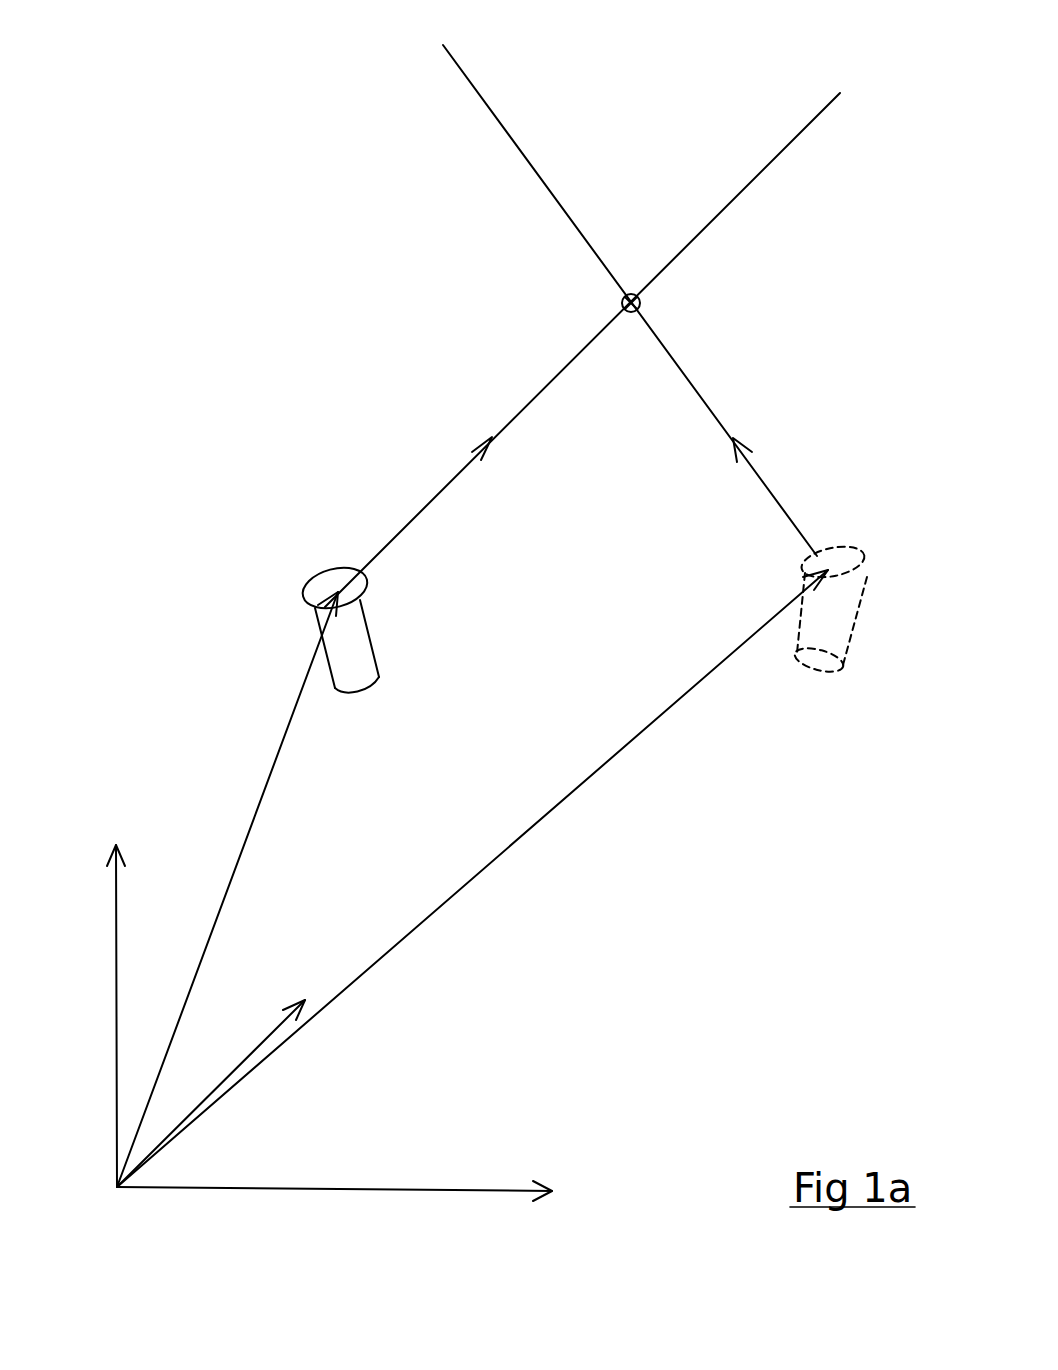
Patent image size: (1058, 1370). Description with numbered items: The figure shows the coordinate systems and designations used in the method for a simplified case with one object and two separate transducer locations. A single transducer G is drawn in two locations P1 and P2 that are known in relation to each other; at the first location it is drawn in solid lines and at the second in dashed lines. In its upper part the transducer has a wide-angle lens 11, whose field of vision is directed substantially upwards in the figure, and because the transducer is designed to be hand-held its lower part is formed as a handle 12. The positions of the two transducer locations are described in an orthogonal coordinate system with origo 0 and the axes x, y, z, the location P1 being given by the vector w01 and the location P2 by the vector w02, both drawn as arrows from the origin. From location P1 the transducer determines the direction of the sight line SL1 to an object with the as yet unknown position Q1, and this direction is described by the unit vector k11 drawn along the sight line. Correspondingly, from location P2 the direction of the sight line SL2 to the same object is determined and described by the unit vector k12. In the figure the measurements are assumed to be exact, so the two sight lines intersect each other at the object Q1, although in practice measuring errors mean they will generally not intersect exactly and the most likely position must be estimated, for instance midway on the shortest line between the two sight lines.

The wide-angle lens 11 is at (315, 580).
The handle 12 is at (325, 650).
The first transducer location P1 is at (397, 668).
The second transducer location P2 is at (853, 665).
The first sight line SL1 is at (828, 94).
The second sight line SL2 is at (435, 45).
The object position Q1 is at (653, 303).
The first sight line unit vector k11 is at (423, 497).
The second sight line unit vector k12 is at (780, 478).
The first transducer location position vector w01 is at (268, 815).
The second transducer location position vector w02 is at (565, 818).
The transducer G is at (780, 645).
The origo 0 is at (310, 1029).
The x axis x is at (562, 1190).
The y axis y is at (308, 988).
The z axis z is at (114, 829).